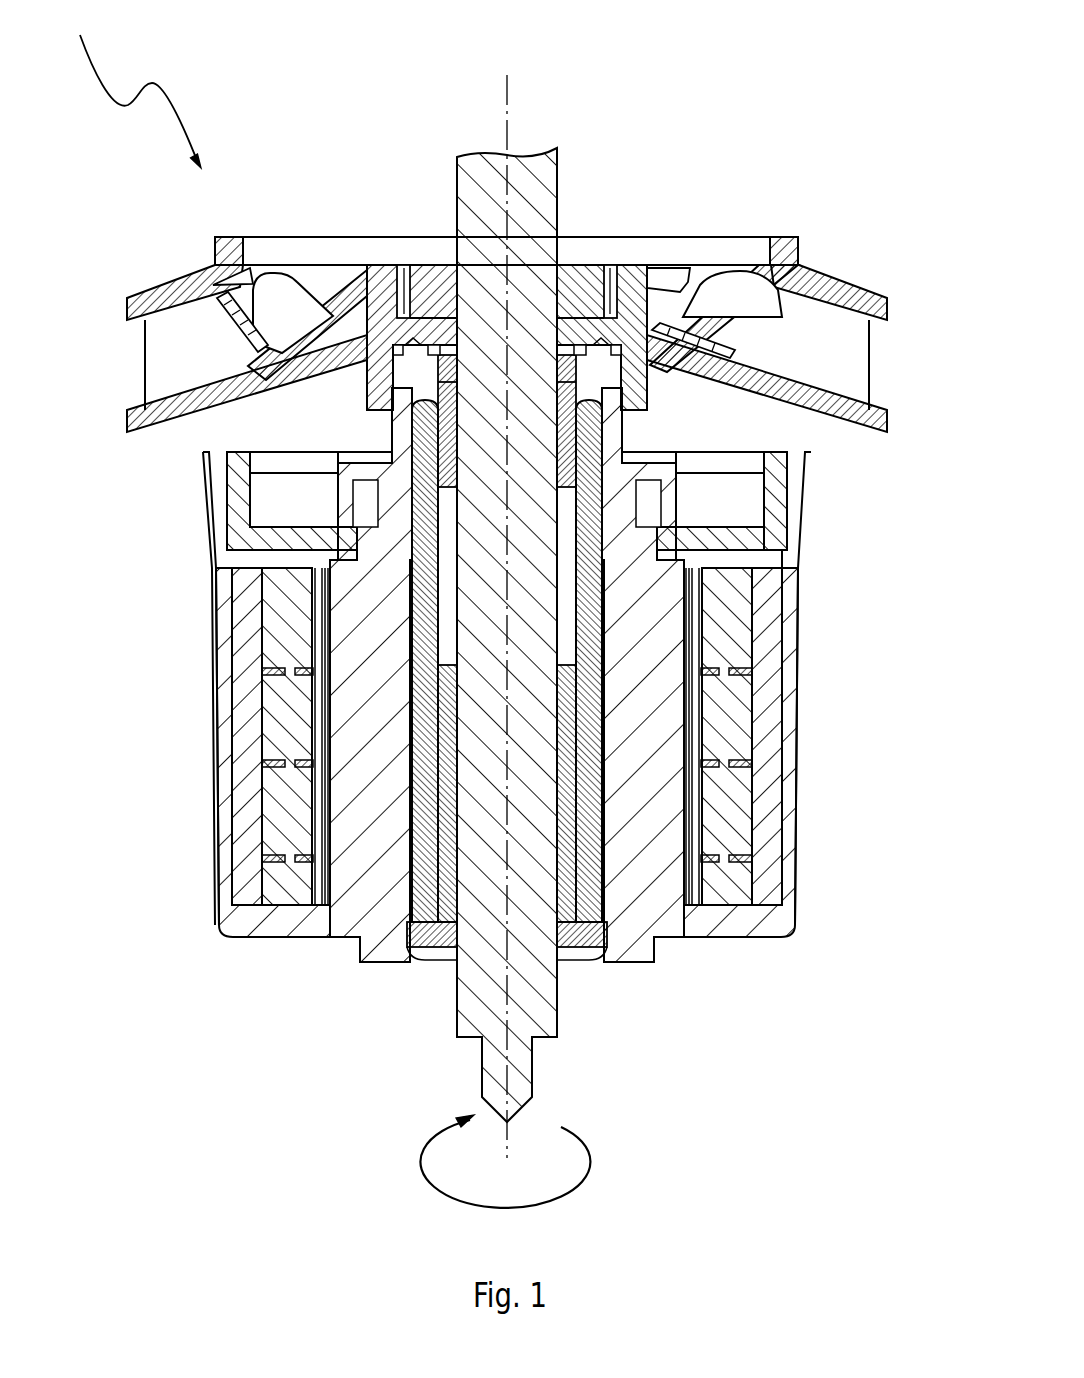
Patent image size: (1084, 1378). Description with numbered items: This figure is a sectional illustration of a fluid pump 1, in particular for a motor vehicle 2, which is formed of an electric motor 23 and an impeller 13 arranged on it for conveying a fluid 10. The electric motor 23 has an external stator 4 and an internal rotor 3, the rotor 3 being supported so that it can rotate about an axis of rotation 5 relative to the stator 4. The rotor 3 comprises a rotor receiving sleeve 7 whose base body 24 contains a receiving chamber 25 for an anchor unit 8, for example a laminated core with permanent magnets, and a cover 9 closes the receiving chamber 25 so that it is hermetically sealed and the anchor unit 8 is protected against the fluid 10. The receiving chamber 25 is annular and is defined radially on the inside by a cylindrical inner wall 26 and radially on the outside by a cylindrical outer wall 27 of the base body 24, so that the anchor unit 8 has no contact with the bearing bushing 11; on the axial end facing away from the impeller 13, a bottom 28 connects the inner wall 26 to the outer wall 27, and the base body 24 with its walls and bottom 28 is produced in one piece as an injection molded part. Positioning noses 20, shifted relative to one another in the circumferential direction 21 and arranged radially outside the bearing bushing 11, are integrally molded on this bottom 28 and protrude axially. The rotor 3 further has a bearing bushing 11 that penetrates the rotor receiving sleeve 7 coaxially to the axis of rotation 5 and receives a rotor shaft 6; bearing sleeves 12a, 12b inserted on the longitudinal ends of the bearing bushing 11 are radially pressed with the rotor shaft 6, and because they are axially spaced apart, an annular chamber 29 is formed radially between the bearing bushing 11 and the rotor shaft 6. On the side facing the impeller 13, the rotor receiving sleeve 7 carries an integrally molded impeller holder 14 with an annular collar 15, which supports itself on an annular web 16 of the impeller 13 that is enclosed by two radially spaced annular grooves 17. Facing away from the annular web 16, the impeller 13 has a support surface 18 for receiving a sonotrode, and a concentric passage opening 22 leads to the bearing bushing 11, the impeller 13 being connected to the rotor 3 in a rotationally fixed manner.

The fluid pump 1 is at (133, 84).
The motor vehicle 2 is at (847, 83).
The rotor 3 is at (840, 604).
The stator 4 is at (156, 730).
The axis of rotation 5 is at (507, 118).
The rotor shaft 6 is at (545, 1017).
The rotor receiving sleeve 7 is at (825, 660).
The anchor unit 8 is at (735, 716).
The cover 9 is at (770, 510).
The fluid 10 is at (874, 368).
The bearing bushing 11 is at (590, 790).
The bearing sleeve 12a is at (432, 937).
The bearing sleeve 12b is at (590, 398).
The impeller 13 is at (802, 246).
The impeller holder 14 is at (392, 372).
The annular collar 15 is at (590, 345).
The annular web 16 is at (400, 300).
The annular grooves 17 is at (396, 345).
The support surface 18 is at (575, 318).
The positioning noses 20 is at (368, 948).
The circumferential direction 21 is at (590, 1157).
The passage opening 22 is at (458, 337).
The electric motor 23 is at (859, 123).
The base body 24 is at (790, 852).
The receiving chamber 25 is at (240, 765).
The inner wall 26 is at (360, 605).
The outer wall 27 is at (222, 657).
The bottom 28 is at (273, 928).
The annular chamber 29 is at (345, 855).